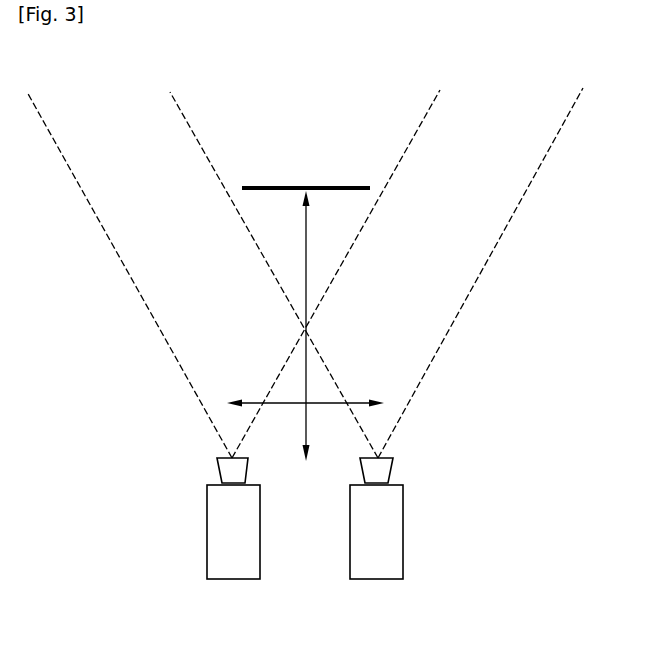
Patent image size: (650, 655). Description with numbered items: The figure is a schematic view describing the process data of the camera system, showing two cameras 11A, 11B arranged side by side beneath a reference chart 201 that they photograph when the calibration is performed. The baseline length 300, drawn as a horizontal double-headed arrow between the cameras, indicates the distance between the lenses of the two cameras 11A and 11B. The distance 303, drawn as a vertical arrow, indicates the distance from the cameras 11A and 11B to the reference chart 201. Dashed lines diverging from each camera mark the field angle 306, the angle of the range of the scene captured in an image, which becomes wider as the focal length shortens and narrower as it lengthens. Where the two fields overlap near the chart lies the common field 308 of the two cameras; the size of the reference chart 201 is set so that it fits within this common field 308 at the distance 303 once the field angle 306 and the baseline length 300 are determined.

The camera 11A is at (230, 579).
The camera 11B is at (378, 579).
The reference chart 201 is at (268, 186).
The baseline length 300 is at (285, 404).
The distance 303 is at (306, 280).
The field angle 306 is at (177, 313).
The common field 308 is at (325, 205).